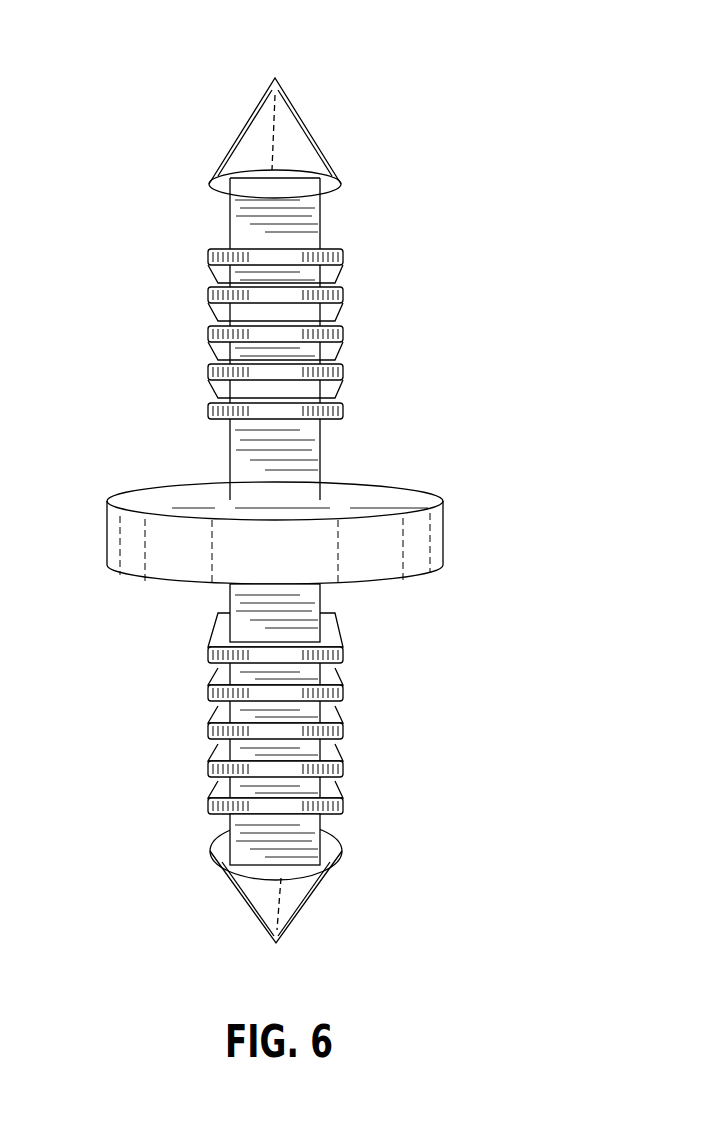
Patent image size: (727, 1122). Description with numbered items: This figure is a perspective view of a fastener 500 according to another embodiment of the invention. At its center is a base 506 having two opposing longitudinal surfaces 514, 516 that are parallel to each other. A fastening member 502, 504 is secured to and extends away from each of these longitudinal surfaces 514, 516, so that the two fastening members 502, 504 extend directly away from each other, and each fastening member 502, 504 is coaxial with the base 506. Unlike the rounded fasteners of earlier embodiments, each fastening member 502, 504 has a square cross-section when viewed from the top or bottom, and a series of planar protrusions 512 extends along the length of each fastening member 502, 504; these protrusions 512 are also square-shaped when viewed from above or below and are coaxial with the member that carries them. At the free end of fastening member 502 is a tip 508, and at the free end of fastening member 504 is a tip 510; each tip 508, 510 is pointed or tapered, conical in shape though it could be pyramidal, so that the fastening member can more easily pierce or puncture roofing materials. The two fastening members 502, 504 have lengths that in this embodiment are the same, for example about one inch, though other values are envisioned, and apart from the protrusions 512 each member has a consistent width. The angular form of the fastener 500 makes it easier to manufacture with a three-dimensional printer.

The fastener 500 is at (490, 147).
The fastening member 502 is at (321, 748).
The fastening member 504 is at (321, 392).
The base 506 is at (443, 533).
The tip 508 is at (306, 912).
The tip 510 is at (307, 127).
The planar protrusions 512 is at (208, 333).
The longitudinal surface 514 is at (145, 579).
The longitudinal surface 516 is at (143, 492).